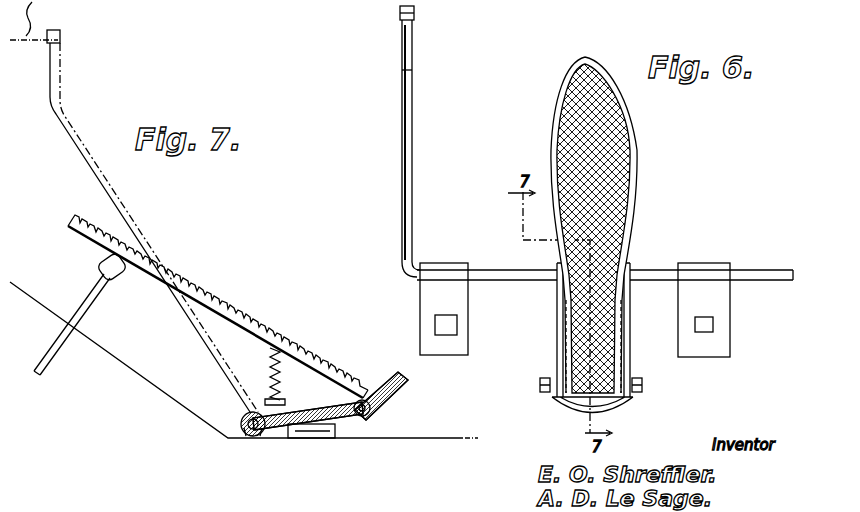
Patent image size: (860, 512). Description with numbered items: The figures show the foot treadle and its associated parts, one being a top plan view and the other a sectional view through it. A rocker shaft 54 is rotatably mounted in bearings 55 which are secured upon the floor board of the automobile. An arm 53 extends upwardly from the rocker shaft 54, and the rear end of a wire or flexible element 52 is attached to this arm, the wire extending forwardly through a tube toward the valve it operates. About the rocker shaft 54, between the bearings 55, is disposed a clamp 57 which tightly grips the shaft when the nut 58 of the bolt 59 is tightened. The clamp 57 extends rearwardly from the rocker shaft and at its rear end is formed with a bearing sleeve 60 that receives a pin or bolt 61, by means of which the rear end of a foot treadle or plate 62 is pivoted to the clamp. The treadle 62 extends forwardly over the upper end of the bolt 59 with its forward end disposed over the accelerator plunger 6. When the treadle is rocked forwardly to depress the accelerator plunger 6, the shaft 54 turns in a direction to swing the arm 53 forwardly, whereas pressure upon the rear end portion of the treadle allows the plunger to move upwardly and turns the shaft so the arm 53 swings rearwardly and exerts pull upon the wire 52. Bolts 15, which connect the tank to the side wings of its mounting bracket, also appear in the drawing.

In FIG. 7, the accelerator plunger 6 is at (85, 305).
In FIG. 6, the bolts 15 is at (327, 0).
In FIG. 6, the wire or flexible element 52 is at (400, 0).
In FIG. 7, the arm 53 is at (73, 118).
In FIG. 6, the arm 53 is at (412, 85).
In FIG. 7, the rocker shaft 54 is at (256, 434).
In FIG. 6, the rocker shaft 54 is at (512, 283).
In FIG. 7, the bearings 55 is at (317, 440).
In FIG. 6, the bearings 55 is at (432, 300).
In FIG. 7, the clamp 57 is at (308, 403).
In FIG. 6, the clamp 57 is at (557, 310).
In FIG. 7, the nut 58 is at (262, 412).
In FIG. 7, the bolt 59 is at (281, 357).
In FIG. 6, the bolt 59 is at (614, 302).
In FIG. 7, the bearing sleeve 60 is at (372, 410).
In FIG. 7, the pin or bolt 61 is at (364, 414).
In FIG. 6, the pin or bolt 61 is at (643, 392).
In FIG. 7, the foot treadle or plate 62 is at (193, 292).
In FIG. 6, the foot treadle or plate 62 is at (612, 157).